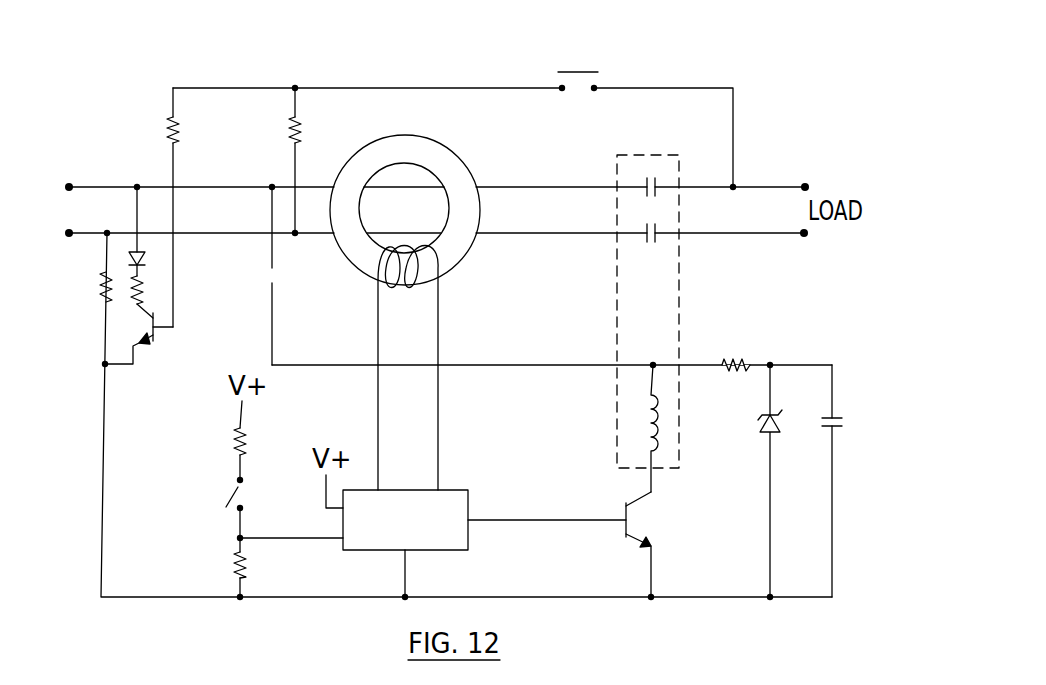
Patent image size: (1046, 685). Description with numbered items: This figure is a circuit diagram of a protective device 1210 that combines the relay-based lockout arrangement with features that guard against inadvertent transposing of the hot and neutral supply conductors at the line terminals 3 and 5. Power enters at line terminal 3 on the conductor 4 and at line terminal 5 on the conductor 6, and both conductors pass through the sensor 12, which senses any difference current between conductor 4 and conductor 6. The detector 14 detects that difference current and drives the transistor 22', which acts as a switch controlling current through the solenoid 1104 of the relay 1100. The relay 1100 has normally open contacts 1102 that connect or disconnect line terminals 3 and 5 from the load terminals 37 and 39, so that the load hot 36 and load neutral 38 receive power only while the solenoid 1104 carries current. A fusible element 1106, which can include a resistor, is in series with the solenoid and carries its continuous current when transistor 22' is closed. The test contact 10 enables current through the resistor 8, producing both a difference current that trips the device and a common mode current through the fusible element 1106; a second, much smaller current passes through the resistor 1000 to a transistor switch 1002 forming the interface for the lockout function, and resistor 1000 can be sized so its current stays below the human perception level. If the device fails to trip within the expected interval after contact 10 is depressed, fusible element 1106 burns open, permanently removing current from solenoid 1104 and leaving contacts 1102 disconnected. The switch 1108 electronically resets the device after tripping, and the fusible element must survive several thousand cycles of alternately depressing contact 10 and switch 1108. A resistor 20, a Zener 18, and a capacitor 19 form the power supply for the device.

The line terminal 3 is at (69, 183).
The conductor 4 is at (213, 185).
The line terminal 5 is at (69, 237).
The conductor 6 is at (192, 233).
The resistor 8 is at (297, 124).
The contact 10 is at (588, 72).
The sensor 12 is at (357, 273).
The ground fault detector 14 is at (384, 552).
The Zener 18 is at (768, 436).
The capacitor 19 is at (838, 416).
The resistor 20 is at (736, 362).
The transistor 22' is at (679, 544).
The load hot 36 is at (757, 185).
The load terminal 37 is at (810, 182).
The load neutral 38 is at (732, 238).
The load terminal 39 is at (803, 240).
The resistor 1000 is at (172, 133).
The transistor switch 1002 is at (150, 343).
The relay 1100 is at (630, 155).
The contacts 1102 is at (645, 191).
The solenoid 1104 is at (647, 430).
The fusible element 1106 is at (104, 292).
The switch 1108 is at (229, 497).
The protective device 1210 is at (757, 92).